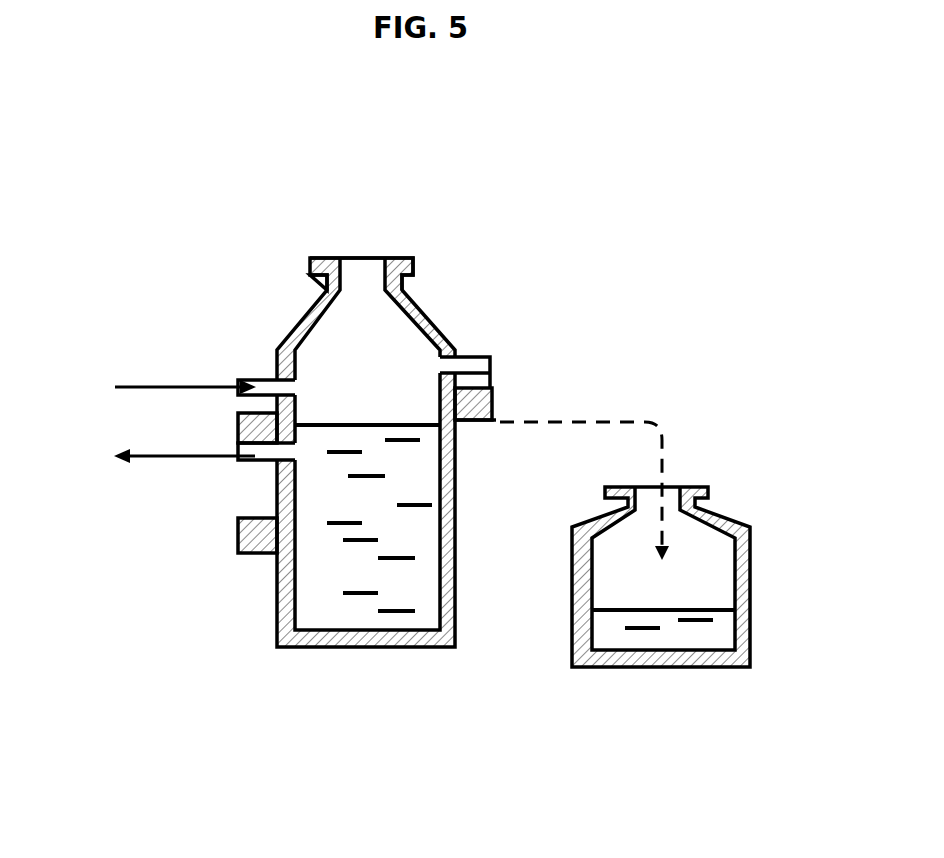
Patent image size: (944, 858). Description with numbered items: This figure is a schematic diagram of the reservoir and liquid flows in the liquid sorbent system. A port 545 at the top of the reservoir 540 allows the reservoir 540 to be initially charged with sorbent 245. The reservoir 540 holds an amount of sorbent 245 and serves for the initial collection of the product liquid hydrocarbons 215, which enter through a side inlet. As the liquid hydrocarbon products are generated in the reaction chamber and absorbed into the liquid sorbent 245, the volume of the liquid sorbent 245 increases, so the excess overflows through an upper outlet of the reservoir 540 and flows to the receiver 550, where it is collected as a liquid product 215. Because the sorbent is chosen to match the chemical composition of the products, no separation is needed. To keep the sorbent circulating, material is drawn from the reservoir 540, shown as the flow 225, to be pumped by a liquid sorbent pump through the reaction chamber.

The port 545 is at (368, 293).
The reservoir 540 is at (368, 380).
The sorbent 245 is at (387, 503).
The product liquid hydrocarbons 215 is at (758, 443).
The drawn sorbent flow 225 is at (157, 458).
The receiver 550 is at (578, 633).